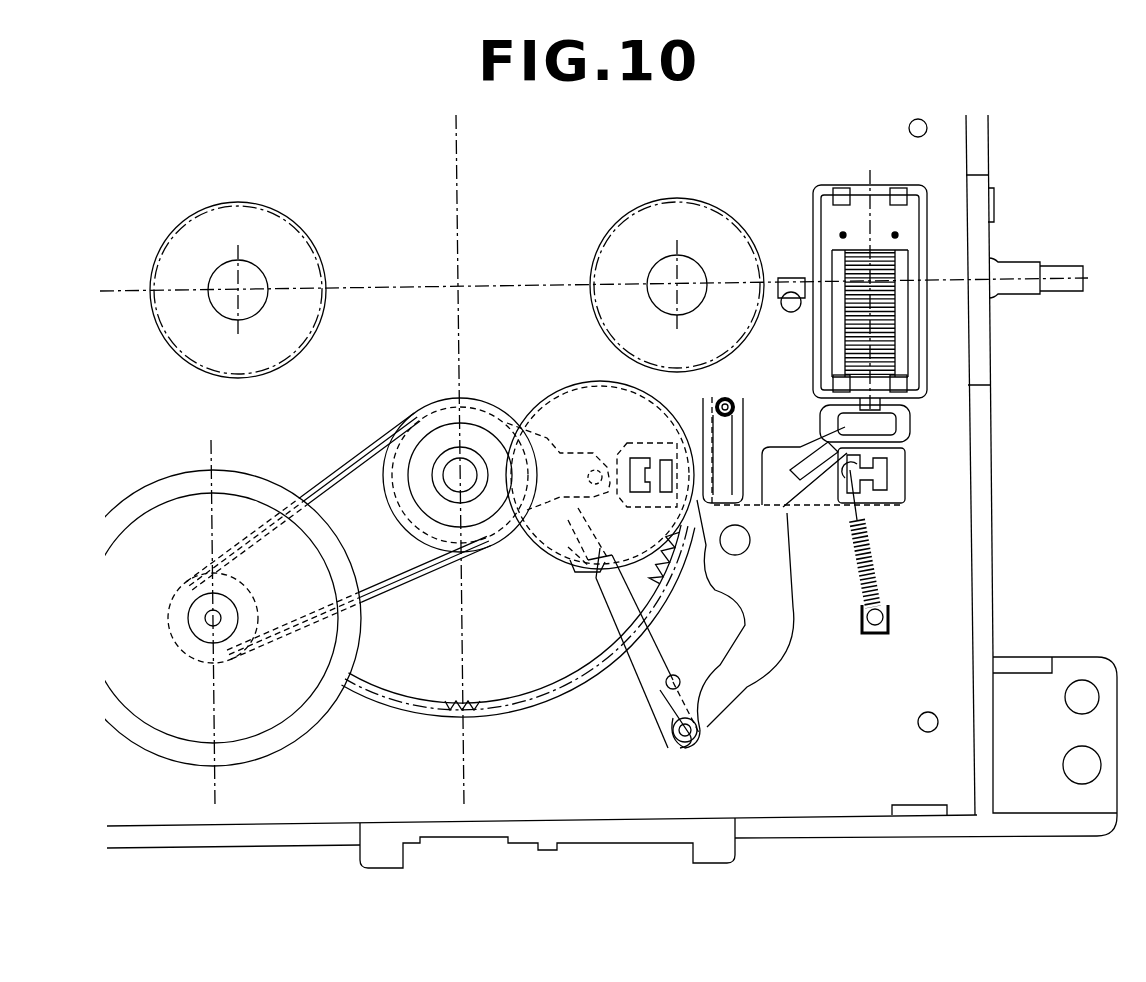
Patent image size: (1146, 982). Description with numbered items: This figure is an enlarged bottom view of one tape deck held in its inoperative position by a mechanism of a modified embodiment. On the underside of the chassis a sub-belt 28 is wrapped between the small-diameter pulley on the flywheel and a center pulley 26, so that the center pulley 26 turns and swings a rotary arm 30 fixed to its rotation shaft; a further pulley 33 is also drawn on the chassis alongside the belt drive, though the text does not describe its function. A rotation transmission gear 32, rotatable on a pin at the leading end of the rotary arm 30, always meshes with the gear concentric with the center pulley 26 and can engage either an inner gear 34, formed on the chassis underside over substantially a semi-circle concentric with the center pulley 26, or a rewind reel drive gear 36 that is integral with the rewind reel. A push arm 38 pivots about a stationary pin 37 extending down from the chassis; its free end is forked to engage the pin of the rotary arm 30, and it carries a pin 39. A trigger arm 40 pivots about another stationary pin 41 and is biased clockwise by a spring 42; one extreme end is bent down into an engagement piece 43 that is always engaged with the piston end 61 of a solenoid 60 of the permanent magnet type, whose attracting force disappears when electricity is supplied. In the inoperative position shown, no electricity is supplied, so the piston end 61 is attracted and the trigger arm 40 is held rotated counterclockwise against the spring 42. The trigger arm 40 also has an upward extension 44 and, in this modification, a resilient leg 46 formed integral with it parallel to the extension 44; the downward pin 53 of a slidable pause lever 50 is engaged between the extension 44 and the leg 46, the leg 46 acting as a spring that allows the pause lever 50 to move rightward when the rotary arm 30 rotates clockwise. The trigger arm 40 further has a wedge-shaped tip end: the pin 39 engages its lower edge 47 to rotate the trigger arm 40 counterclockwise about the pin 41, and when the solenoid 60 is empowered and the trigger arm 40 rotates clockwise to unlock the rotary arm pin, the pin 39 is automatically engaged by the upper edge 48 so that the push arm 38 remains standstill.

The center pulley 26 is at (448, 398).
The sub-belt 28 is at (340, 467).
The rotary arm 30 is at (537, 552).
The rotation transmission gear 32 is at (590, 392).
The idler pulley 33 is at (172, 267).
The inner gear 34 is at (405, 695).
The rewind reel drive gear 36 is at (612, 262).
The stationary pin 37 is at (690, 745).
The push arm 38 is at (625, 606).
The pin 39 is at (693, 693).
The trigger arm 40 is at (757, 662).
The stationary pin 41 is at (733, 548).
The spring 42 is at (880, 577).
The engagement piece 43 is at (900, 470).
The upward extension 44 is at (693, 420).
The resilient leg 46 is at (775, 425).
The lower edge 47 is at (672, 738).
The upper edge 48 is at (682, 683).
The pause lever 50 is at (860, 472).
The downward pin 53 is at (726, 398).
The solenoid 60 is at (838, 245).
The piston end 61 is at (905, 425).